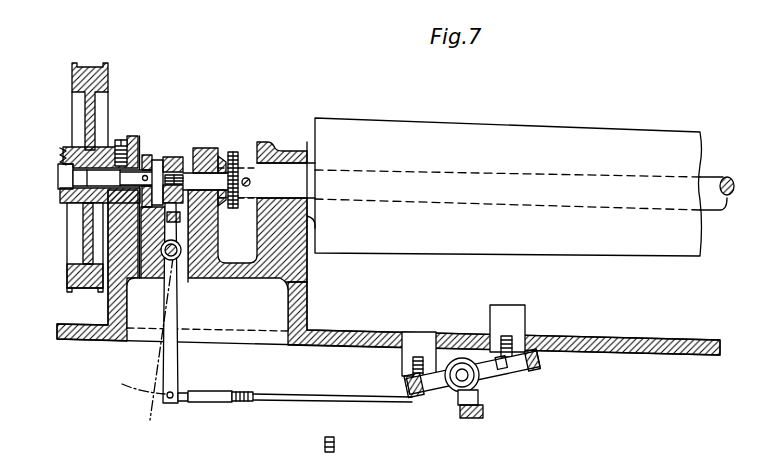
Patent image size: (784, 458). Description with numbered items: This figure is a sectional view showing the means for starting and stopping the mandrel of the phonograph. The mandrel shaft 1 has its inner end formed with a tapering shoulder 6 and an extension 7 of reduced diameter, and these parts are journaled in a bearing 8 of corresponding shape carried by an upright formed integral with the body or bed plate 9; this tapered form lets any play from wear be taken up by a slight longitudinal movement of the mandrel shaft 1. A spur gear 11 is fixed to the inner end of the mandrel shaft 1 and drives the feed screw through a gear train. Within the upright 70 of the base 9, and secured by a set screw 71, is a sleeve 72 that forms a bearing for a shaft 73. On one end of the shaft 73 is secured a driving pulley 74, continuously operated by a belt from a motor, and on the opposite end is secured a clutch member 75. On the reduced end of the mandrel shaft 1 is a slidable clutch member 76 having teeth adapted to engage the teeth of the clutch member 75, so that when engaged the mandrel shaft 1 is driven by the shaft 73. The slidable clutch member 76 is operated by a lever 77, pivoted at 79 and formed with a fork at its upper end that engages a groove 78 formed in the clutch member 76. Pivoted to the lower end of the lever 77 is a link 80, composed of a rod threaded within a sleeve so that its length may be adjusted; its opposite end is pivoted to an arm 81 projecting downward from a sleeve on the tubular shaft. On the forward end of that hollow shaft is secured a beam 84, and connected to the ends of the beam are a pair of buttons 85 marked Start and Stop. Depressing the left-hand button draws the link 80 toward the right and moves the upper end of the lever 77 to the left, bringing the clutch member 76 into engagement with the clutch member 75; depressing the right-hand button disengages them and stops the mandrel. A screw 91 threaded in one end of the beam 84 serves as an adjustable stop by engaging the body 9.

The mandrel shaft 1 is at (277, 170).
The tapering shoulder 6 is at (213, 150).
The extension of reduced diameter 7 is at (621, 131).
The bearing 8 is at (197, 148).
The body or bed plate 9 is at (327, 321).
The spur gear 11 is at (233, 150).
The upright 70 is at (115, 250).
The set screw 71 is at (121, 140).
The sleeve 72 is at (60, 202).
The shaft 73 is at (78, 177).
The driving pulley 74 is at (86, 106).
The clutch member 75 is at (148, 155).
The slidable clutch member 76 is at (164, 152).
The lever 77 is at (172, 308).
The groove 78 is at (168, 212).
The pivot 79 is at (165, 260).
The link 80 is at (292, 396).
The arm 81 is at (483, 405).
The beam 84 is at (493, 380).
The buttons 85 is at (407, 332).
The screw 91 is at (533, 372).